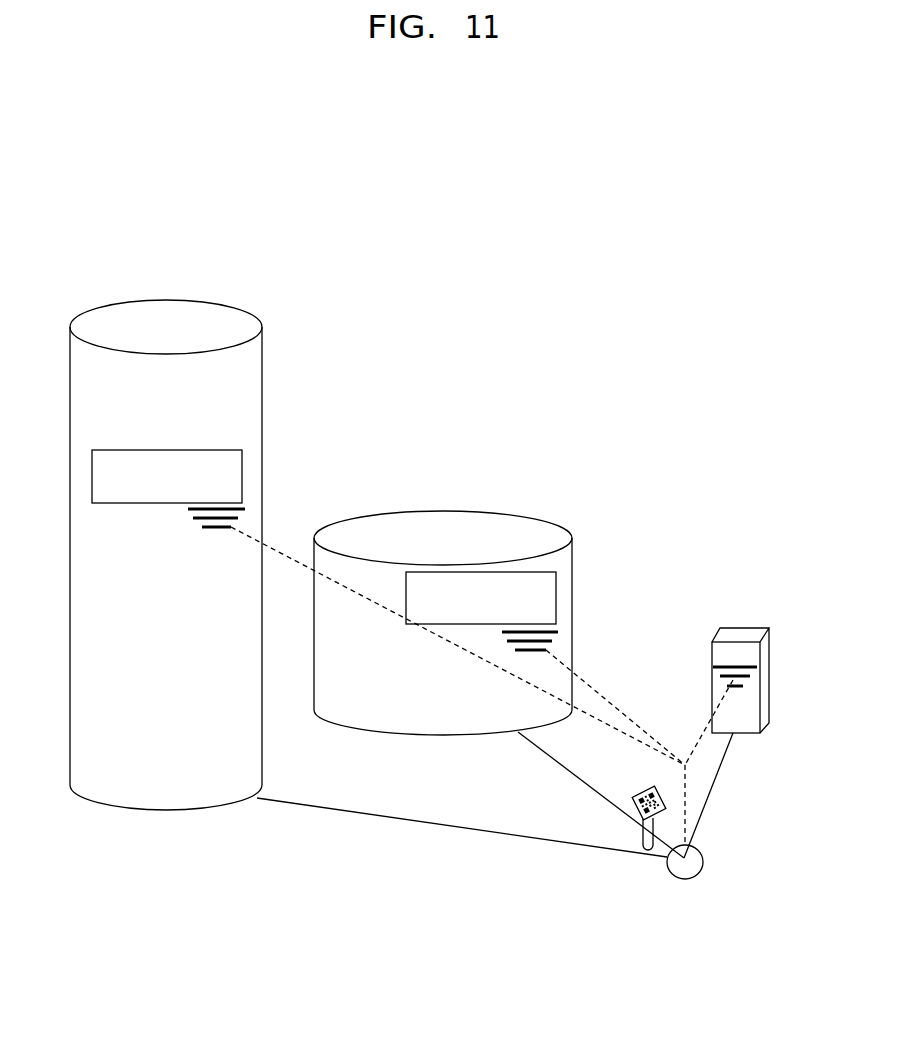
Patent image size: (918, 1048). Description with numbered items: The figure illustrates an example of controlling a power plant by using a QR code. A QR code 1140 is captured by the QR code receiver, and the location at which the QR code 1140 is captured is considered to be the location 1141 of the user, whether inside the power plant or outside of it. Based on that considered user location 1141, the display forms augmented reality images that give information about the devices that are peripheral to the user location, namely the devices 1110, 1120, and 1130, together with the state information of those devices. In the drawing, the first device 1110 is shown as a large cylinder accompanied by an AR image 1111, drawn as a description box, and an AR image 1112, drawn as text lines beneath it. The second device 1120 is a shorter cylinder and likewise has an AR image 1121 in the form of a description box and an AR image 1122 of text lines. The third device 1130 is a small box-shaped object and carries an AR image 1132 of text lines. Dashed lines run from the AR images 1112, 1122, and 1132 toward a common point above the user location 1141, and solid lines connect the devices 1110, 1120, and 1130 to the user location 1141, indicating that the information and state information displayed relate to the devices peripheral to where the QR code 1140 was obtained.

The device 1110 is at (168, 300).
The AR image 1111 is at (168, 450).
The AR image 1112 is at (245, 509).
The device 1120 is at (443, 512).
The AR image 1121 is at (556, 598).
The AR image 1122 is at (552, 641).
The device 1130 is at (748, 628).
The AR image 1132 is at (750, 676).
The QR code 1140 is at (637, 792).
The location of the user 1141 is at (703, 862).